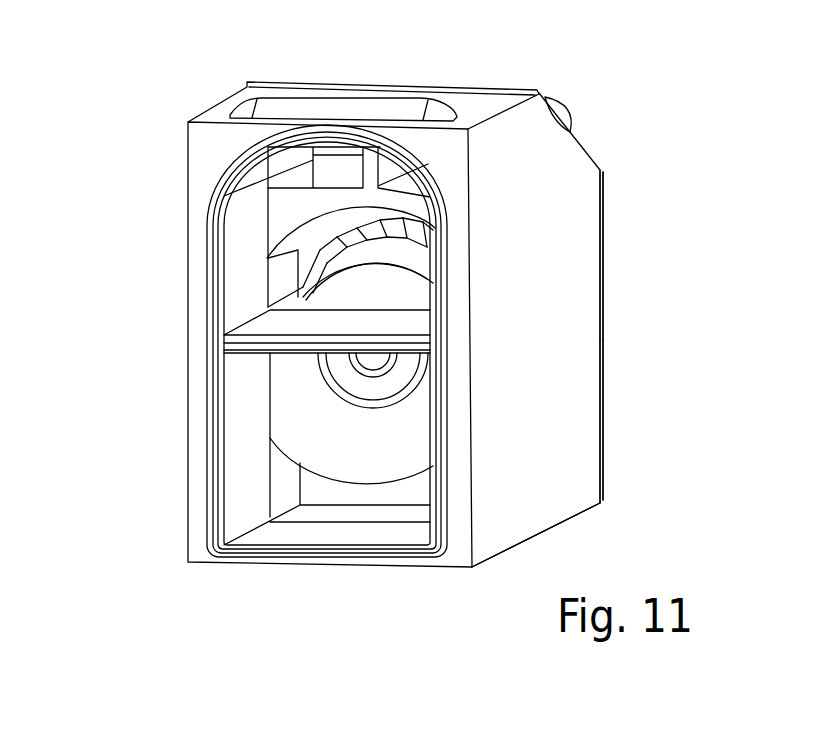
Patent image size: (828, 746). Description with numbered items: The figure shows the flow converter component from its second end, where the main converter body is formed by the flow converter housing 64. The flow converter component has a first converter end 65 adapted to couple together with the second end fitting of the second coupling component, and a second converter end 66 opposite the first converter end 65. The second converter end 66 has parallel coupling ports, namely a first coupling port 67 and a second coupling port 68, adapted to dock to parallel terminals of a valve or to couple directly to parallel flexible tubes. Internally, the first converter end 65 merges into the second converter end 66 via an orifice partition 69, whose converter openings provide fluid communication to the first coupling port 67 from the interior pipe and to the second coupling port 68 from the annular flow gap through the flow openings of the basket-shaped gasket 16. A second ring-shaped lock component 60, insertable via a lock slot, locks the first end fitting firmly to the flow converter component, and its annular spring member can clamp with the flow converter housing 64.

The basket-shaped gasket 16 is at (337, 244).
The second ring-shaped lock component 60 is at (565, 113).
The flow converter housing 64 is at (563, 420).
The first converter end 65 is at (550, 252).
The second converter end 66 is at (197, 207).
The first coupling port 67 is at (347, 446).
The second coupling port 68 is at (352, 311).
The orifice partition 69 is at (320, 404).